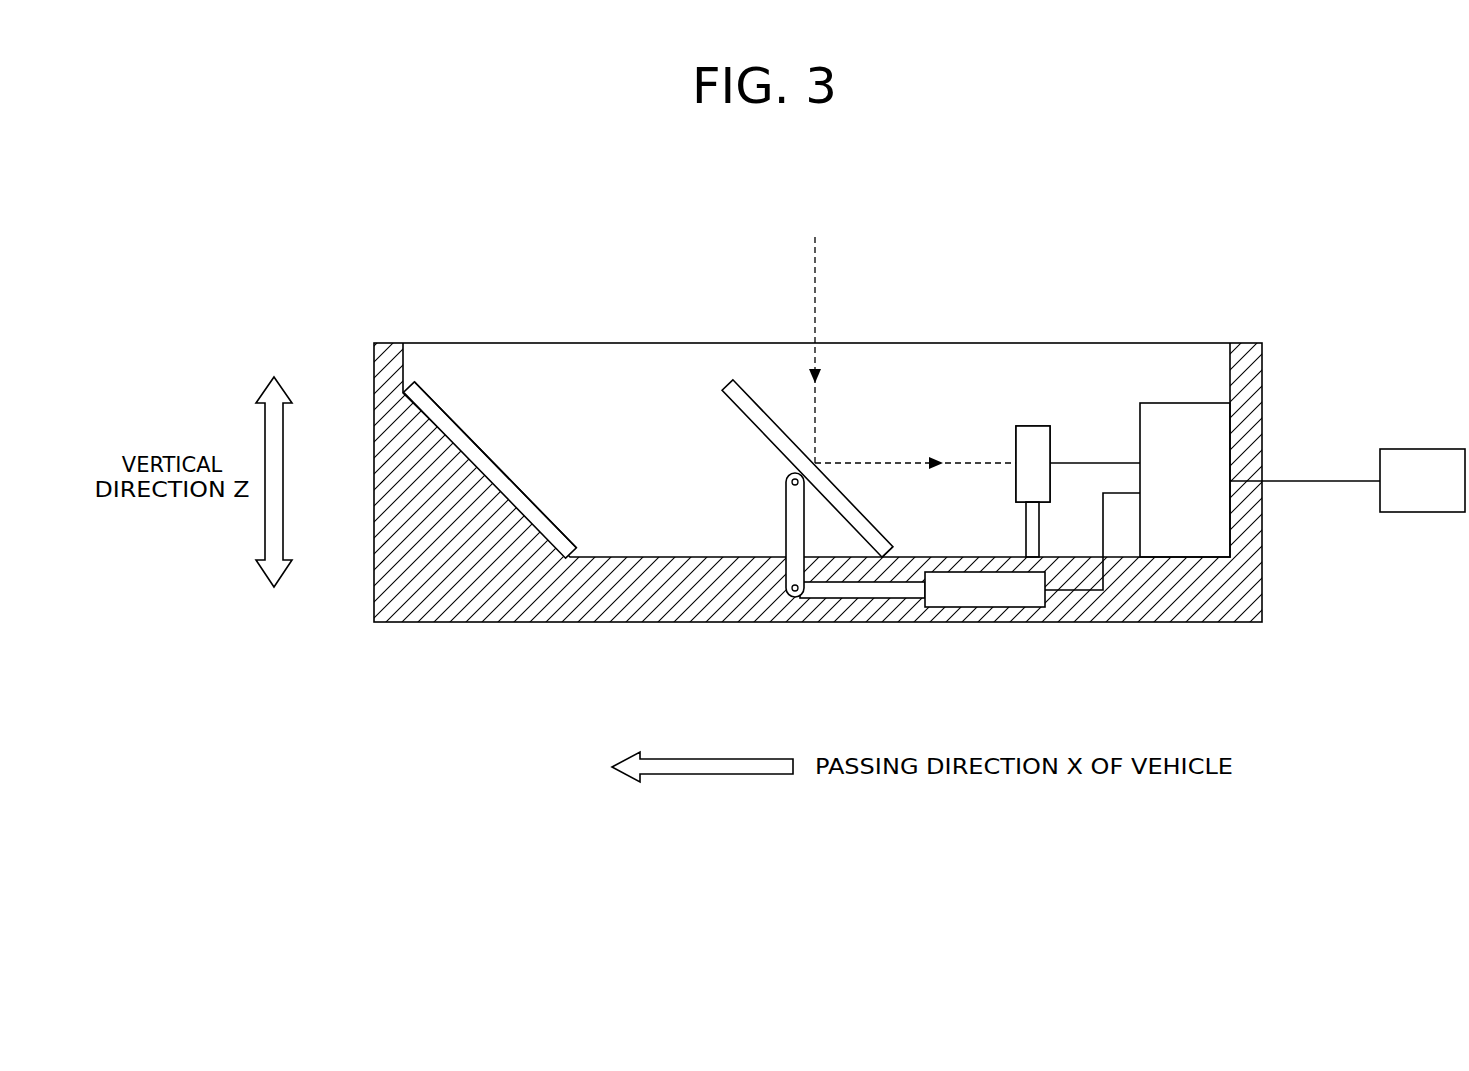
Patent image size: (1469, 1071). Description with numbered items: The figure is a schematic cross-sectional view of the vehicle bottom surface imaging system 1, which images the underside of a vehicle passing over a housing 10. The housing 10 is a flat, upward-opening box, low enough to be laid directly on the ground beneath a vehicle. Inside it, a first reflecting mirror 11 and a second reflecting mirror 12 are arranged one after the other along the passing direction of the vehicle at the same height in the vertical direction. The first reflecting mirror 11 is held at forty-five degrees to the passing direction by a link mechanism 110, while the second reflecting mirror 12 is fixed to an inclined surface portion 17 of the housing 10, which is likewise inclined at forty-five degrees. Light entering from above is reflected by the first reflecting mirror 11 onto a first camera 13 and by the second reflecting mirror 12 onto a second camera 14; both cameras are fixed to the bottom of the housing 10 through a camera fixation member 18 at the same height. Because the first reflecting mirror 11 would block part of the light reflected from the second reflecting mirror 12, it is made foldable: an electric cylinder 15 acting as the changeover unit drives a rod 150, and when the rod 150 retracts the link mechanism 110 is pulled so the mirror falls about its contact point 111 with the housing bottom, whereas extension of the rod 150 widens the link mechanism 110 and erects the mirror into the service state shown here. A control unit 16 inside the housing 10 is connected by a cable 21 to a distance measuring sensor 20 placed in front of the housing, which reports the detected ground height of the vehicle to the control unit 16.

The vehicle bottom surface imaging system 1 is at (1140, 236).
The housing 10 is at (374, 589).
The first reflecting mirror 11 is at (763, 412).
The link mechanism 110 is at (794, 528).
The contact point 111 is at (882, 556).
The second reflecting mirror 12 is at (442, 418).
The first camera 13 is at (1032, 433).
The second camera 14 is at (1032, 433).
The electric cylinder 15 is at (985, 592).
The rod 150 is at (873, 594).
The control unit 16 is at (1187, 415).
The inclined surface portion 17 is at (520, 491).
The camera fixation member 18 is at (1028, 526).
The distance measuring sensor 20 is at (1427, 449).
The cable 21 is at (1328, 479).